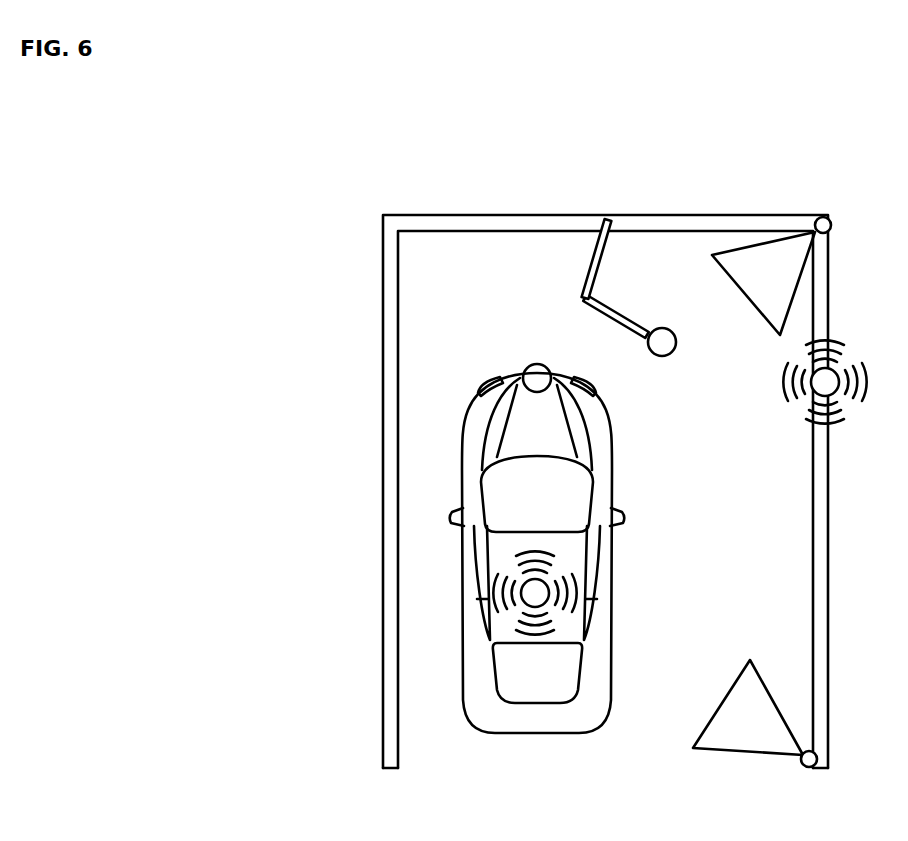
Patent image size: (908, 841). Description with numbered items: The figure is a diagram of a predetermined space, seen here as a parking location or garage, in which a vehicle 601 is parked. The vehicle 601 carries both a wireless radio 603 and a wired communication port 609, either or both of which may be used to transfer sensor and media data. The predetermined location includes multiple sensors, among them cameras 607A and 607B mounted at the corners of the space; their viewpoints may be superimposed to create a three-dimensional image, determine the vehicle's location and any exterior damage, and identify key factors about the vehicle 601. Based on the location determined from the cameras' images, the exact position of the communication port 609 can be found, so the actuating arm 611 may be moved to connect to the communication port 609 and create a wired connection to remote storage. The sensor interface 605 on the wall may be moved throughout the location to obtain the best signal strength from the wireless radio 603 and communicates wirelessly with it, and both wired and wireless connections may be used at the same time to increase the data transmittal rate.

The vehicle 601 is at (482, 385).
The wireless radio 603 is at (520, 607).
The sensor interface 605 is at (807, 398).
The camera 607A is at (803, 766).
The camera 607B is at (832, 227).
The wired communication port 609 is at (535, 378).
The actuating arm 611 is at (646, 345).